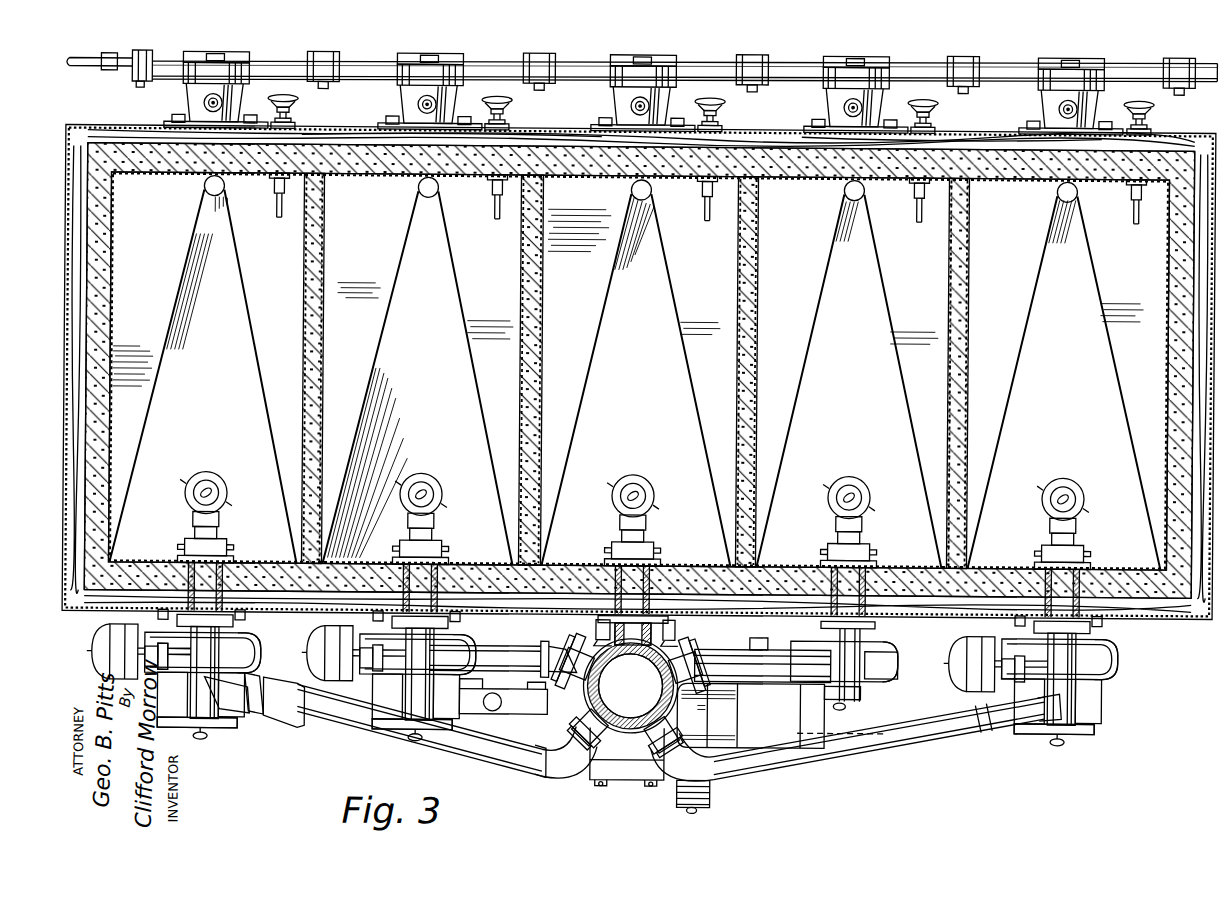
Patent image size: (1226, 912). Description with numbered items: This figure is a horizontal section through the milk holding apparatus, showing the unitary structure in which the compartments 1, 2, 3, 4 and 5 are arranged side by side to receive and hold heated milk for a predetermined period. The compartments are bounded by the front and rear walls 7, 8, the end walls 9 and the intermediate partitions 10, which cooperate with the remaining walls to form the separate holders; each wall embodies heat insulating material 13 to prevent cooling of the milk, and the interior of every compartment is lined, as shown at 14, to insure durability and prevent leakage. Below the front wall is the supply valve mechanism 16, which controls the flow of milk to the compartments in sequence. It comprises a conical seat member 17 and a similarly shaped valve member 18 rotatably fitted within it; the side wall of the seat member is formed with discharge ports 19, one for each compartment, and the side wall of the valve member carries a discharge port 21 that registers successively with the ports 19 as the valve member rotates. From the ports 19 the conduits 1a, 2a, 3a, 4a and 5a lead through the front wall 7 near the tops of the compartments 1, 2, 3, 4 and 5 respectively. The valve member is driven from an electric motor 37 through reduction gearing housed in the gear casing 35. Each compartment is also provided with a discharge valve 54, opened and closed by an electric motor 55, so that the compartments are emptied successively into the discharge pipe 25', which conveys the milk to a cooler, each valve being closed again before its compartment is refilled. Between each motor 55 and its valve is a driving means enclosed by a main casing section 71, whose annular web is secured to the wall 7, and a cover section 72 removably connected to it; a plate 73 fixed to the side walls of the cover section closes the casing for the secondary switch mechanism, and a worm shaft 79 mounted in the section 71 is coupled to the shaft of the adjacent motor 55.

The compartment 1 is at (204, 367).
The compartment 2 is at (418, 369).
The compartment 3 is at (637, 370).
The compartment 4 is at (850, 372).
The compartment 5 is at (1065, 375).
The front wall 7 is at (1145, 616).
The rear wall 8 is at (968, 136).
The end wall 9 is at (98, 288).
The intermediate partition 10 is at (323, 345).
The heat insulating material 13 is at (592, 166).
The lining 14 is at (112, 240).
The valve mechanism 16 is at (573, 715).
The seat member 17 is at (690, 650).
The valve member 18 is at (634, 760).
The discharge port 19 is at (652, 668).
The discharge port 21 is at (662, 699).
The discharge pipe 25' is at (641, 92).
The gear casing 35 is at (574, 651).
The electric motor 37 is at (782, 716).
The discharge valve 54 is at (395, 96).
The electric motor 55 is at (104, 641).
The main section 71 is at (255, 650).
The cover section 72 is at (263, 670).
The plate 73 is at (232, 734).
The shaft 79 is at (181, 660).
The conduit 1a is at (542, 777).
The conduit 2a is at (503, 647).
The conduit 3a is at (612, 566).
The conduit 4a is at (772, 649).
The conduit 5a is at (832, 764).